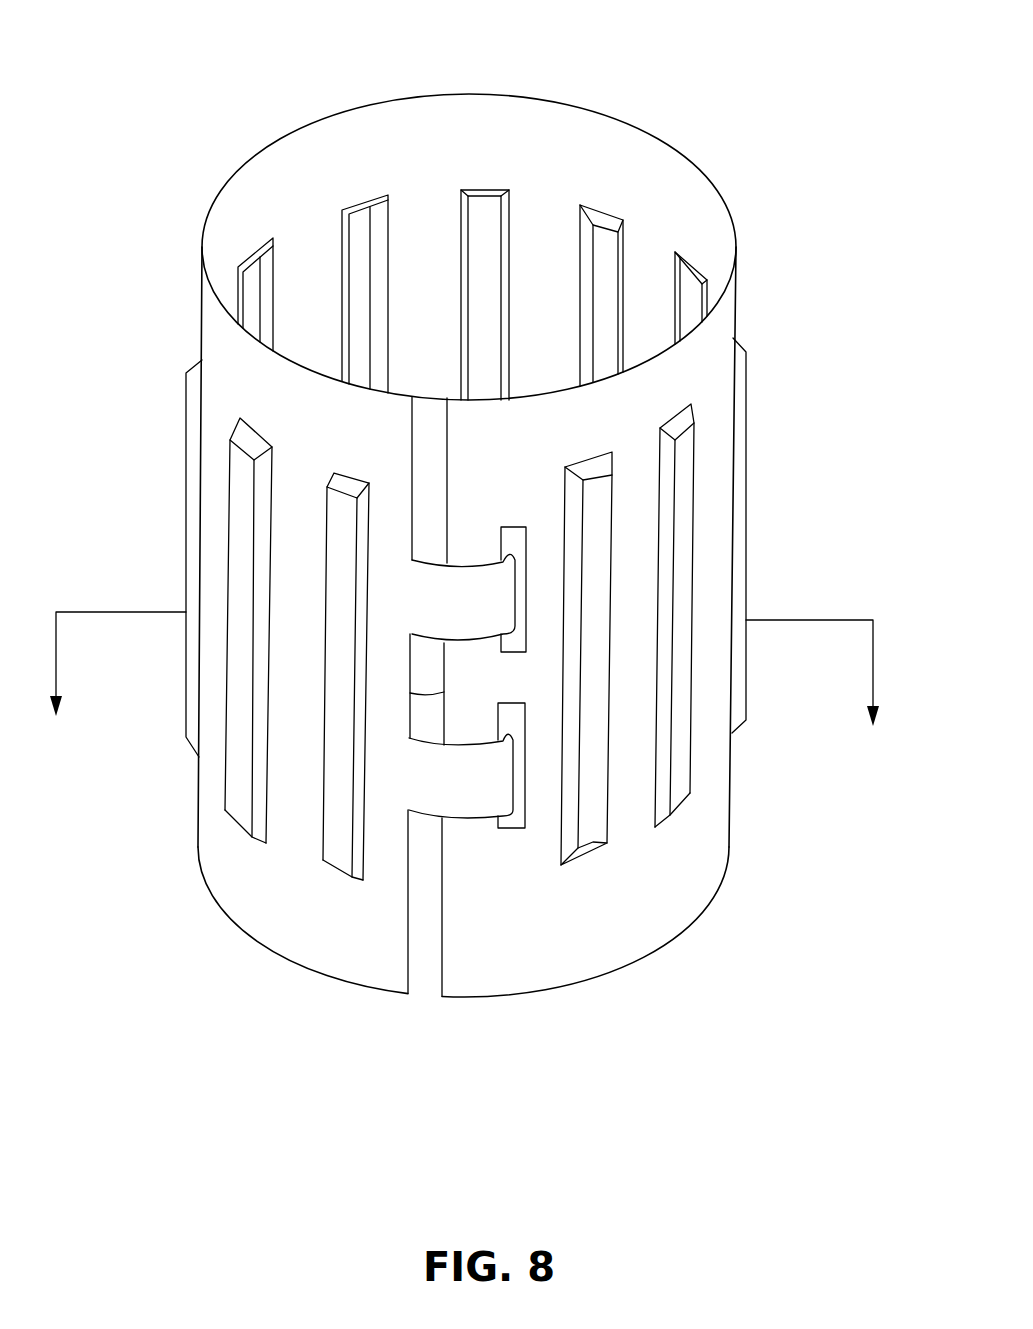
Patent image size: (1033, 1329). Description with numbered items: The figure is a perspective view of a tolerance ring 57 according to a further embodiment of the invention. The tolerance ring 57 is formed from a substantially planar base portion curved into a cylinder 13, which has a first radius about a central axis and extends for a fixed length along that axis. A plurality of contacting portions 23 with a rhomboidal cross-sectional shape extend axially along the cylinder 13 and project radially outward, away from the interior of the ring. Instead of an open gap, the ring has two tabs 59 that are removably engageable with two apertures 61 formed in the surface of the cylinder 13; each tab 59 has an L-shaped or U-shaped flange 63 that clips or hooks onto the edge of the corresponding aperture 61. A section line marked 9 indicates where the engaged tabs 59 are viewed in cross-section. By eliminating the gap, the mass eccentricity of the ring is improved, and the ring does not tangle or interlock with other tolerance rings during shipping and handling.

The tolerance ring 57 is at (782, 151).
The cylinder 13 is at (712, 585).
The contacting portions 23 is at (685, 475).
The tabs 59 is at (435, 597).
The flange 63 is at (507, 553).
The apertures 61 is at (513, 820).
The section line 9- 9 is at (464, 686).